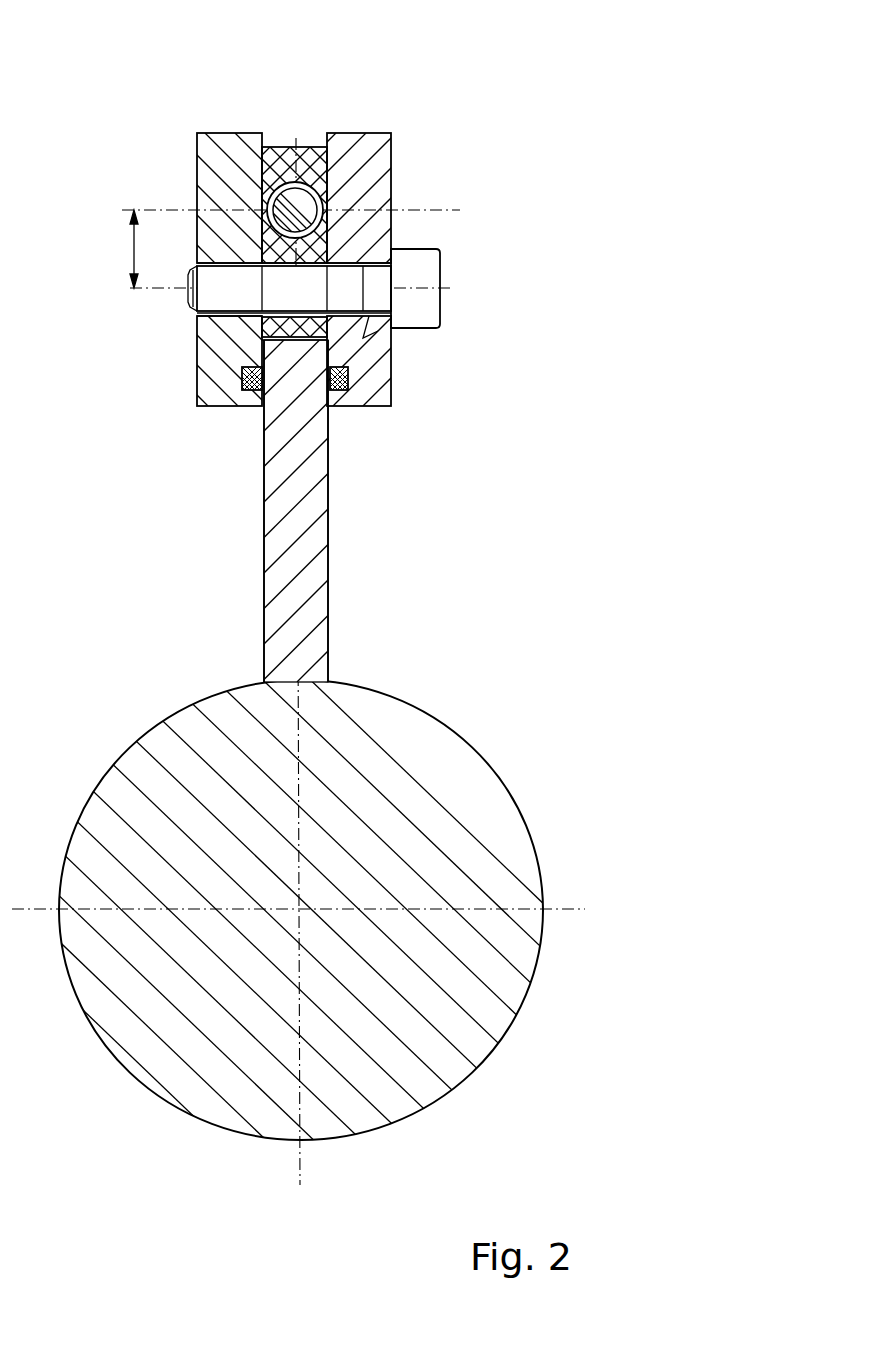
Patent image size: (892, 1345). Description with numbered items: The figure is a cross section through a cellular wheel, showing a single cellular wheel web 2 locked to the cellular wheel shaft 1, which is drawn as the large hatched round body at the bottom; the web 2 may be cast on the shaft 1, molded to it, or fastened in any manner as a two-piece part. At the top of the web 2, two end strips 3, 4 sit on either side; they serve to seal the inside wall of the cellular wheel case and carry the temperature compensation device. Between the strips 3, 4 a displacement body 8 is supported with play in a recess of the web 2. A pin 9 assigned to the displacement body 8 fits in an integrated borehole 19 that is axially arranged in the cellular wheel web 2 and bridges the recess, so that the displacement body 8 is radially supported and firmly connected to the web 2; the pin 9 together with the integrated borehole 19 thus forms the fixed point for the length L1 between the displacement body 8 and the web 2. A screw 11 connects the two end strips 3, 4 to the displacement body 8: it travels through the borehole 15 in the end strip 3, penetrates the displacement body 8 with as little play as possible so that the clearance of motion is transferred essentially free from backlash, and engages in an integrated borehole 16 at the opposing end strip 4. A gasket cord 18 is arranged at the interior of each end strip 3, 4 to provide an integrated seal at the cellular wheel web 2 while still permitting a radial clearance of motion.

The cellular wheel shaft 1 is at (403, 758).
The cellular wheel web 2 is at (295, 582).
The end strip 3 is at (378, 192).
The end strip 4 is at (202, 168).
The displacement body 8 is at (282, 163).
The pin 9 is at (278, 126).
The integrated borehole 19 is at (300, 203).
The screw 11 is at (422, 310).
The borehole 15 is at (365, 338).
The integrated borehole 16 is at (220, 326).
The gasket cord 18 is at (243, 390).
The length L1 is at (112, 249).